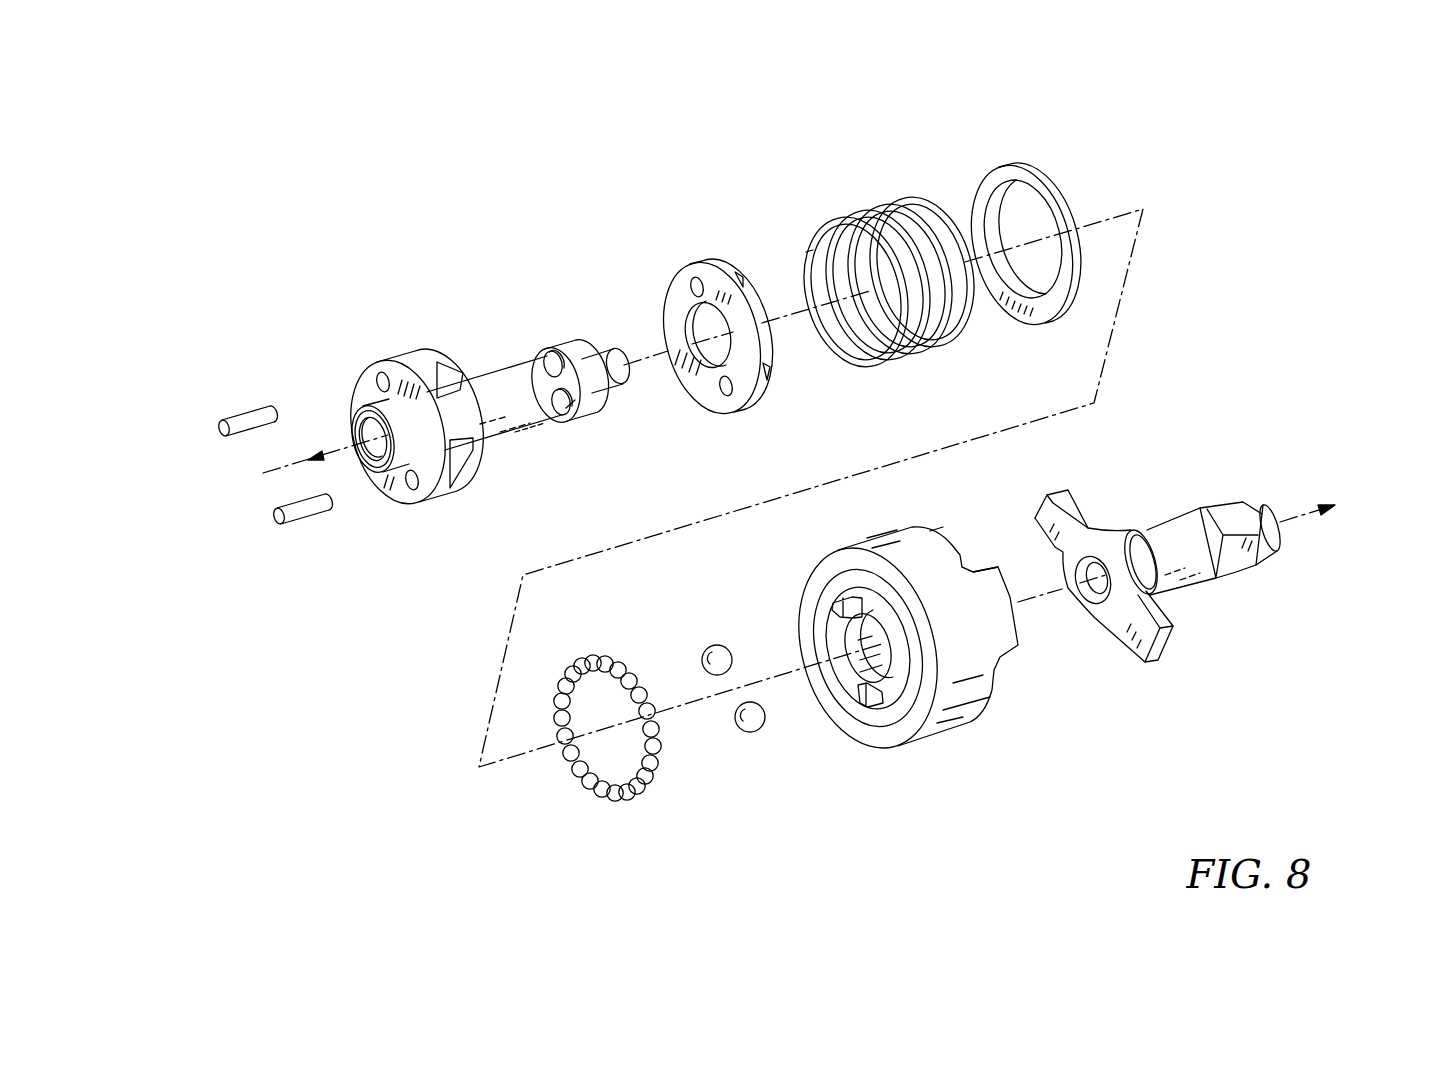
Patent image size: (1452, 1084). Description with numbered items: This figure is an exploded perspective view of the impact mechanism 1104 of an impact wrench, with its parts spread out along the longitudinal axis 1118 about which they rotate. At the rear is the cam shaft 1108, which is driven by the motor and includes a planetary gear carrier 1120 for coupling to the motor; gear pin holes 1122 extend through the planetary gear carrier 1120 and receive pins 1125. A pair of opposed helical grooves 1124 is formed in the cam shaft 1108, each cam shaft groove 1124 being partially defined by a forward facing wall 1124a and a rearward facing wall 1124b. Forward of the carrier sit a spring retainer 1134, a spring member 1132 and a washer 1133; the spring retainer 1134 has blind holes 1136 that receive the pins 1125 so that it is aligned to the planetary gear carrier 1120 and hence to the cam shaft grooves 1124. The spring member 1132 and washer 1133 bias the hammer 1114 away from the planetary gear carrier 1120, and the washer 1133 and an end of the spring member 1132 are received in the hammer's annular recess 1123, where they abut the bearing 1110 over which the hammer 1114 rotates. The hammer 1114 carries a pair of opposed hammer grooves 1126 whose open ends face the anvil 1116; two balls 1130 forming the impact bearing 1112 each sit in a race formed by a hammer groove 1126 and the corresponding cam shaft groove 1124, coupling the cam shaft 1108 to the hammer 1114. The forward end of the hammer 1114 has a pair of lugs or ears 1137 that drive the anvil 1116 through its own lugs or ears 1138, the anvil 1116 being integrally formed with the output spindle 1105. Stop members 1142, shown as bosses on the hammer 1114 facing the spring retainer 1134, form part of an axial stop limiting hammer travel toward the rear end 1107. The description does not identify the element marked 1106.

The impact mechanism 1104 is at (622, 234).
The output spindle 1105 is at (1227, 505).
The knob assembly 1106 is at (1300, 562).
The rear end 1107 is at (346, 355).
The cam shaft 1108 is at (501, 437).
The bearing 1110 is at (606, 652).
The impact bearing 1112 is at (775, 735).
The hammer 1114 is at (1030, 692).
The anvil 1116 is at (1258, 613).
The longitudinal axis 1118 is at (338, 447).
The planetary gear carrier 1120 is at (450, 352).
The gear pin holes 1122 is at (383, 378).
The annular recess 1123 is at (857, 582).
The helical grooves 1124 is at (551, 360).
The forward facing wall 1124a is at (560, 432).
The rearward facing wall 1124b is at (578, 402).
The pins 1125 is at (240, 415).
The hammer grooves 1126 is at (908, 712).
The balls 1130 is at (751, 710).
The spring member 1132 is at (861, 215).
The washer 1133 is at (1020, 178).
The spring retainer 1134 is at (672, 300).
The blind holes 1136 is at (695, 284).
The lugs or ears 1137 is at (990, 577).
The lugs or ears 1138 is at (1062, 497).
The second stop members 1142 is at (832, 604).